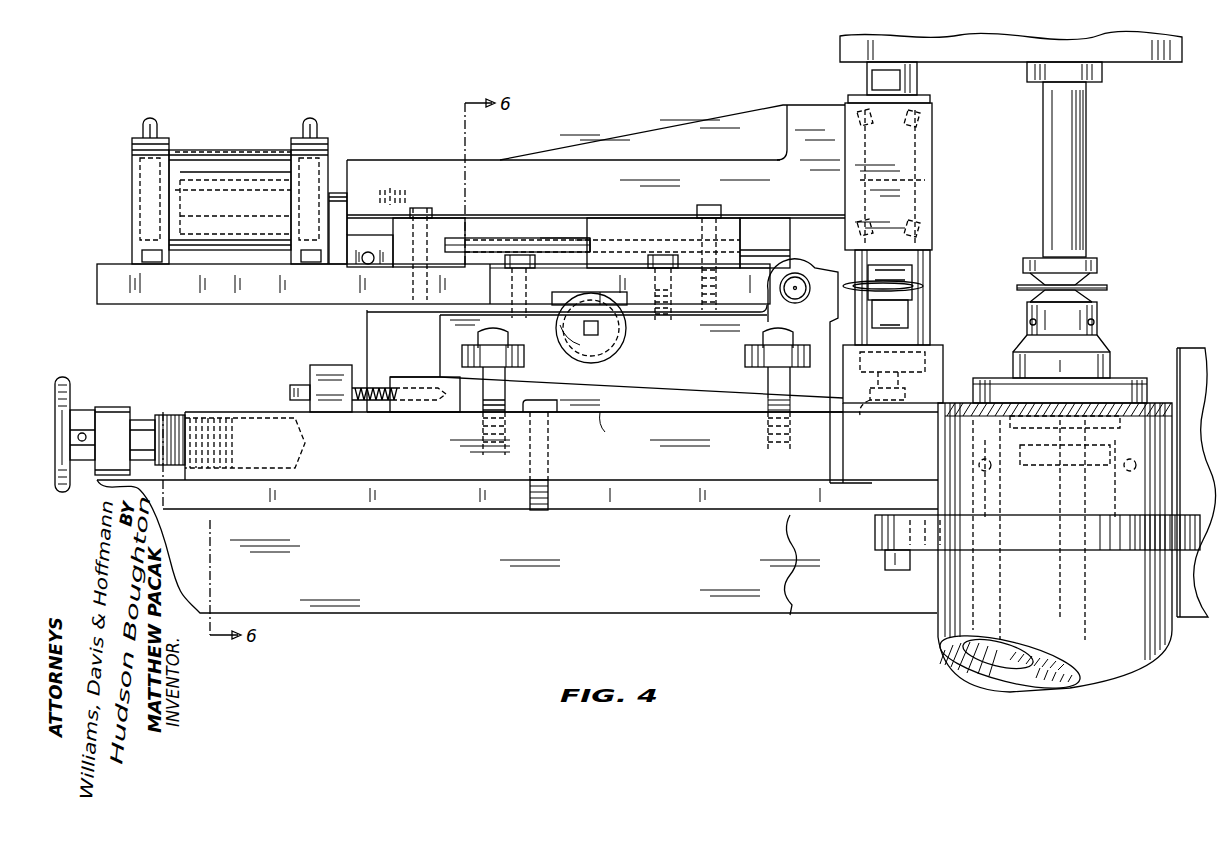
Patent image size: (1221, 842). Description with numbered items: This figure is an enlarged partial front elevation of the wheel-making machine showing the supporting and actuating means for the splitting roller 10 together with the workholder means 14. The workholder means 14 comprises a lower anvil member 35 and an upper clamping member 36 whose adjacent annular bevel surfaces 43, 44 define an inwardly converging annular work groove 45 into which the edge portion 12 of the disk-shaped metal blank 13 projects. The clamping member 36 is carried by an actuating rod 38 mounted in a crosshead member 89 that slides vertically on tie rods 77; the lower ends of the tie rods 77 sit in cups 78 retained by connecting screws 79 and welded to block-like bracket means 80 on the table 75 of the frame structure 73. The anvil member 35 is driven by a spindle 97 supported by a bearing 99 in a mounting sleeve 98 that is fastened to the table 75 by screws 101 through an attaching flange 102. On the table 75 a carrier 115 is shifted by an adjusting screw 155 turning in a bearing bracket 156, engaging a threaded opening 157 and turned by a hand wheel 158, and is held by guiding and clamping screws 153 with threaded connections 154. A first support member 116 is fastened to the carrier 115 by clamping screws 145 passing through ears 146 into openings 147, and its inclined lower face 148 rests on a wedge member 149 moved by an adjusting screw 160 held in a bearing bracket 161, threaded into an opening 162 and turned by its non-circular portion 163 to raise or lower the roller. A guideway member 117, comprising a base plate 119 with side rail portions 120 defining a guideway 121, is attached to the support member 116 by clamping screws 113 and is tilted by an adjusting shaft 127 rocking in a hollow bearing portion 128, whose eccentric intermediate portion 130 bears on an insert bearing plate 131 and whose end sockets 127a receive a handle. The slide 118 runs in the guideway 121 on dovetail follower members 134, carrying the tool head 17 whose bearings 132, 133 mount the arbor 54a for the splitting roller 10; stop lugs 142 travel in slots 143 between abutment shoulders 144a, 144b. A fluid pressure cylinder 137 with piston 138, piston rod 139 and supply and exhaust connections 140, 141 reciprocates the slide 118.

The splitting roller 10 is at (925, 280).
The edge portion 12 is at (1090, 278).
The metal blank 13 is at (1095, 290).
The workholder means 14 is at (1112, 314).
The tool carrying head 17 is at (932, 150).
The anvil member 35 is at (1028, 312).
The clamping member 36 is at (1023, 260).
The actuating rod 38 is at (1087, 165).
The annular bevel surface 43 is at (1030, 298).
The annular bevel surface 44 is at (1030, 288).
The annular work groove 45 is at (1100, 292).
The shaft or arbor 54a is at (925, 180).
The frame structure 73 is at (450, 615).
The table 75 is at (325, 509).
The tie rods 77 is at (917, 82).
The cups 78 is at (925, 322).
The connecting screws 79 is at (870, 400).
The bracket means 80 is at (935, 368).
The crosshead member 89 is at (1150, 60).
The spindle 97 is at (1043, 668).
The mounting sleeve 98 is at (937, 592).
The bearing 99 is at (948, 460).
The screws 101 is at (885, 560).
The attaching flange 102 is at (875, 530).
The connecting and clamping screws 113 is at (515, 255).
The carrier 115 is at (412, 470).
The first support member 116 is at (430, 328).
The guideway member 117 is at (160, 300).
The slide 118 is at (632, 170).
The base plate 119 is at (290, 300).
The side rail portions 120 is at (635, 228).
The guideway 121 is at (745, 248).
The adjusting shaft 127 is at (600, 332).
The noncircular end sockets 127a is at (575, 338).
The hollow bearing portion 128 is at (585, 338).
The eccentric intermediate portion 130 is at (585, 308).
The insert bearing plate 131 is at (605, 308).
The bearing 132 is at (850, 115).
The bearing 133 is at (925, 228).
The follower members 134 is at (795, 262).
The fluid pressure cylinder 137 is at (222, 150).
The piston 138 is at (176, 160).
The piston rod 139 is at (338, 190).
The fluid pressure supply and exhaust connection 140 is at (145, 128).
The fluid pressure supply and exhaust connection 141 is at (305, 127).
The stop lugs 142 is at (462, 240).
The slots 143 is at (545, 240).
The abutment shoulder 144a is at (578, 240).
The abutment shoulder 144b is at (440, 235).
The connecting and clamping screws 145 is at (772, 378).
The ears 146 is at (765, 342).
The openings 147 is at (792, 434).
The lower face 148 is at (640, 396).
The wedge member 149 is at (606, 412).
The guiding and clamping screws 153 is at (543, 402).
The threaded connections 154 is at (550, 508).
The adjusting screw 155 is at (142, 420).
The bearing bracket 156 is at (112, 407).
The threaded opening 157 is at (245, 418).
The hand wheel 158 is at (80, 360).
The adjusting screw 160 is at (374, 388).
The bearing bracket 161 is at (335, 352).
The threaded opening 162 is at (440, 402).
The non-circular portion 163 is at (296, 385).